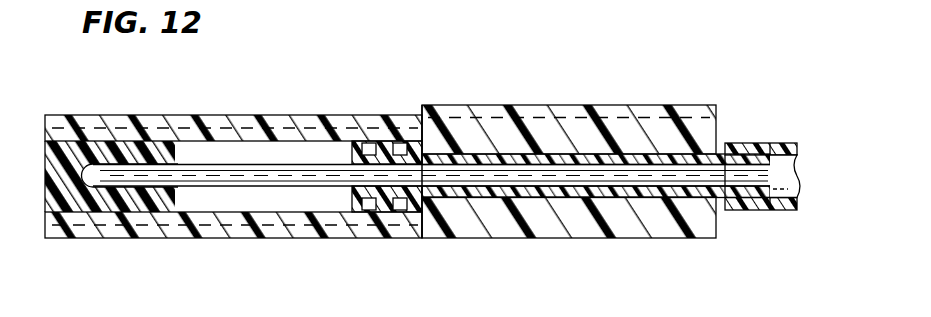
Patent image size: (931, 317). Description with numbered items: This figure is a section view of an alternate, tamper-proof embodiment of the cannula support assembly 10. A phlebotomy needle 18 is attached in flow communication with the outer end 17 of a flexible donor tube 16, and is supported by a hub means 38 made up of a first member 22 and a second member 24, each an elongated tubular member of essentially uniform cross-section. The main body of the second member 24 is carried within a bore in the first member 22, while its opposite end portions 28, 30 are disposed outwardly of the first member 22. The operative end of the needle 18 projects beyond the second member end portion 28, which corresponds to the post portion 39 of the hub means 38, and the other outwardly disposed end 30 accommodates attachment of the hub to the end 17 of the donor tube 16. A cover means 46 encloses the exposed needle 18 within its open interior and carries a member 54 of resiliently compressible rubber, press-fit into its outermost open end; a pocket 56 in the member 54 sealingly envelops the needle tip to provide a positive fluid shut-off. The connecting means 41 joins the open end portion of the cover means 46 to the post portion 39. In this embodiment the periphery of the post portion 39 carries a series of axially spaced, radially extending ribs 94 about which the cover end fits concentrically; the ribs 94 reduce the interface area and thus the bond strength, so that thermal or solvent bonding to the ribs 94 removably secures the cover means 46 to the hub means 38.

The cannula support assembly 10 is at (582, 86).
The donor tube 16 is at (781, 155).
The outer end of the donor tube 17 is at (731, 147).
The phlebotomy needle 18 is at (262, 168).
The first member 22 is at (630, 220).
The second member 24 is at (585, 192).
The second member end portion 28 is at (437, 200).
The other outwardly disposed end of the second member 30 is at (746, 199).
The hub means 38 is at (675, 100).
The post portion 39 is at (352, 196).
The connecting means 41 is at (390, 115).
The cover means 46 is at (177, 250).
The member 54 is at (50, 160).
The pocket 56 is at (101, 180).
The ribs 94 is at (347, 143).